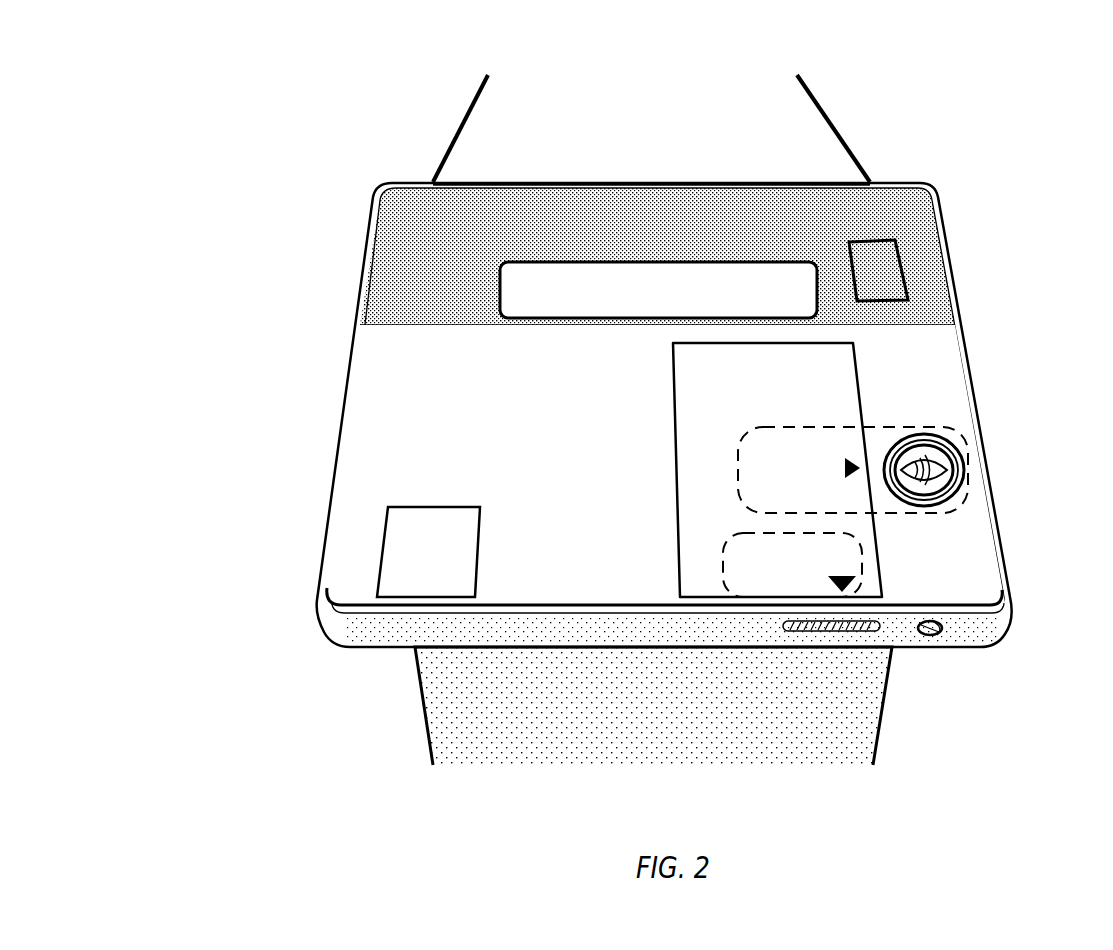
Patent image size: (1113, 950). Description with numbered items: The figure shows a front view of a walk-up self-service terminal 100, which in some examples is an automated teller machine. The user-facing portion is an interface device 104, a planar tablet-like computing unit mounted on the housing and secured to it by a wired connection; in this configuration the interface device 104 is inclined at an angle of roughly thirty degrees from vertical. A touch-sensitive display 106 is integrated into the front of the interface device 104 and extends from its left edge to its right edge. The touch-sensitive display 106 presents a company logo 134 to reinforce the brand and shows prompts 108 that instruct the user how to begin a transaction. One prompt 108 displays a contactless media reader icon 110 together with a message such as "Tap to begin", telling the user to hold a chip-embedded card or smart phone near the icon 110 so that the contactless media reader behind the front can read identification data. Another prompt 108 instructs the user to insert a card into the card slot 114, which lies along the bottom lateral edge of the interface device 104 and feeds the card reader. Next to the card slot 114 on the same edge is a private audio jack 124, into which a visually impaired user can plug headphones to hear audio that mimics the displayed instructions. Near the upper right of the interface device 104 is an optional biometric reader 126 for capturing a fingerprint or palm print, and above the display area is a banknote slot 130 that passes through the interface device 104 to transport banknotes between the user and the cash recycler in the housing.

The walk-up self-service terminal 100 is at (155, 98).
The interface device 104 is at (370, 272).
The touch-sensitive display 106 is at (397, 393).
The prompts 108 is at (967, 468).
The contactless media reader icon 110 is at (948, 443).
The card slot 114 is at (843, 630).
The private audio jack 124 is at (940, 632).
The biometric reader 126 is at (905, 270).
The banknote slot 130 is at (507, 288).
The company logo 134 is at (395, 576).